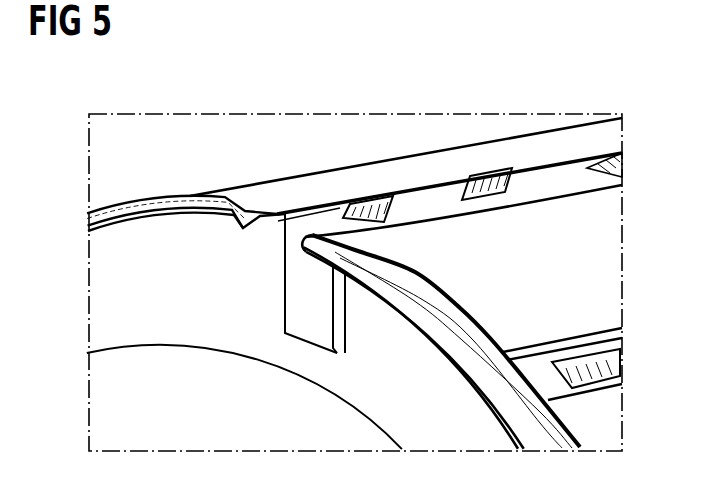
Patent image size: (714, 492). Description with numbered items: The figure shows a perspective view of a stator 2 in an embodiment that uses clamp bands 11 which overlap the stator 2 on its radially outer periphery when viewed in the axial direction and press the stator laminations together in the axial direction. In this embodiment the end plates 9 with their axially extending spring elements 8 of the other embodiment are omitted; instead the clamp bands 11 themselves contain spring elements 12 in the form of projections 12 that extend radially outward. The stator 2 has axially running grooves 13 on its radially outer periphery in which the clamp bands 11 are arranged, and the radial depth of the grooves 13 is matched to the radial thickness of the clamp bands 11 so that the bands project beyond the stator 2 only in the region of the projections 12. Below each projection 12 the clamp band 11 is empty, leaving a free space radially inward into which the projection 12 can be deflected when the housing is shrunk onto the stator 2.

The stator 2 is at (600, 267).
The spring elements 8 is at (193, 196).
The end plate 9 is at (113, 273).
The clamp bands 11 is at (598, 186).
The spring elements 12 is at (377, 193).
The grooves 13 is at (552, 166).